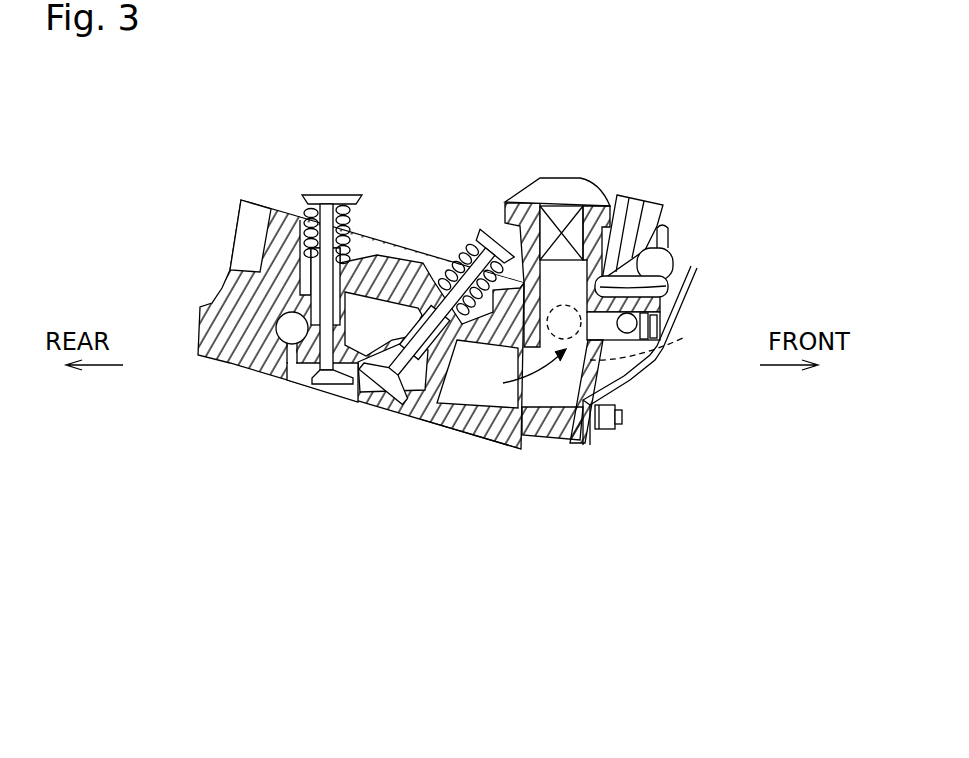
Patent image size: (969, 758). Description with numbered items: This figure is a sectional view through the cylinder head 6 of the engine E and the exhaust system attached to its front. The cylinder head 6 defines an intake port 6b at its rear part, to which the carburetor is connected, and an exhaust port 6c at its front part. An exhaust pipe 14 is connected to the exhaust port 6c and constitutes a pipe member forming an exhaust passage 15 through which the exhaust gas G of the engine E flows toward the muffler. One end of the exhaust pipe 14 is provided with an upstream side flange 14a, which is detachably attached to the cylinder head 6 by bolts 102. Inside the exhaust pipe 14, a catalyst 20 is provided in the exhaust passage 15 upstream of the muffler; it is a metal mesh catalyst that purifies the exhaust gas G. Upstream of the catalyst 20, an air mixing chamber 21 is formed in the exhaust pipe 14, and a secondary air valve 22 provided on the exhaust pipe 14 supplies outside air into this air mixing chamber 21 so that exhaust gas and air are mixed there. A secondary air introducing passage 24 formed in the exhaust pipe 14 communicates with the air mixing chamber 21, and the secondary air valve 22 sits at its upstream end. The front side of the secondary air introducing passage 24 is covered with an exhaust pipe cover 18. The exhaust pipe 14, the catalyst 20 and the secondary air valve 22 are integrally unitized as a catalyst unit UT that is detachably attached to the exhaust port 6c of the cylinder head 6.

The cylinder head 6 is at (190, 362).
The engine E is at (327, 334).
The intake port 6b is at (241, 250).
The exhaust port 6c is at (518, 448).
The exhaust pipe 14 is at (600, 367).
The flange 14a is at (503, 212).
The exhaust passage 15 is at (567, 275).
The exhaust pipe cover 18 is at (662, 366).
The catalyst 20 is at (565, 213).
The air mixing chamber 21 is at (654, 344).
The secondary air valve 22 is at (668, 205).
The secondary air introducing passage 24 is at (638, 318).
The bolts 102 is at (622, 430).
The catalyst unit UT is at (606, 232).
The exhaust gas G is at (527, 383).